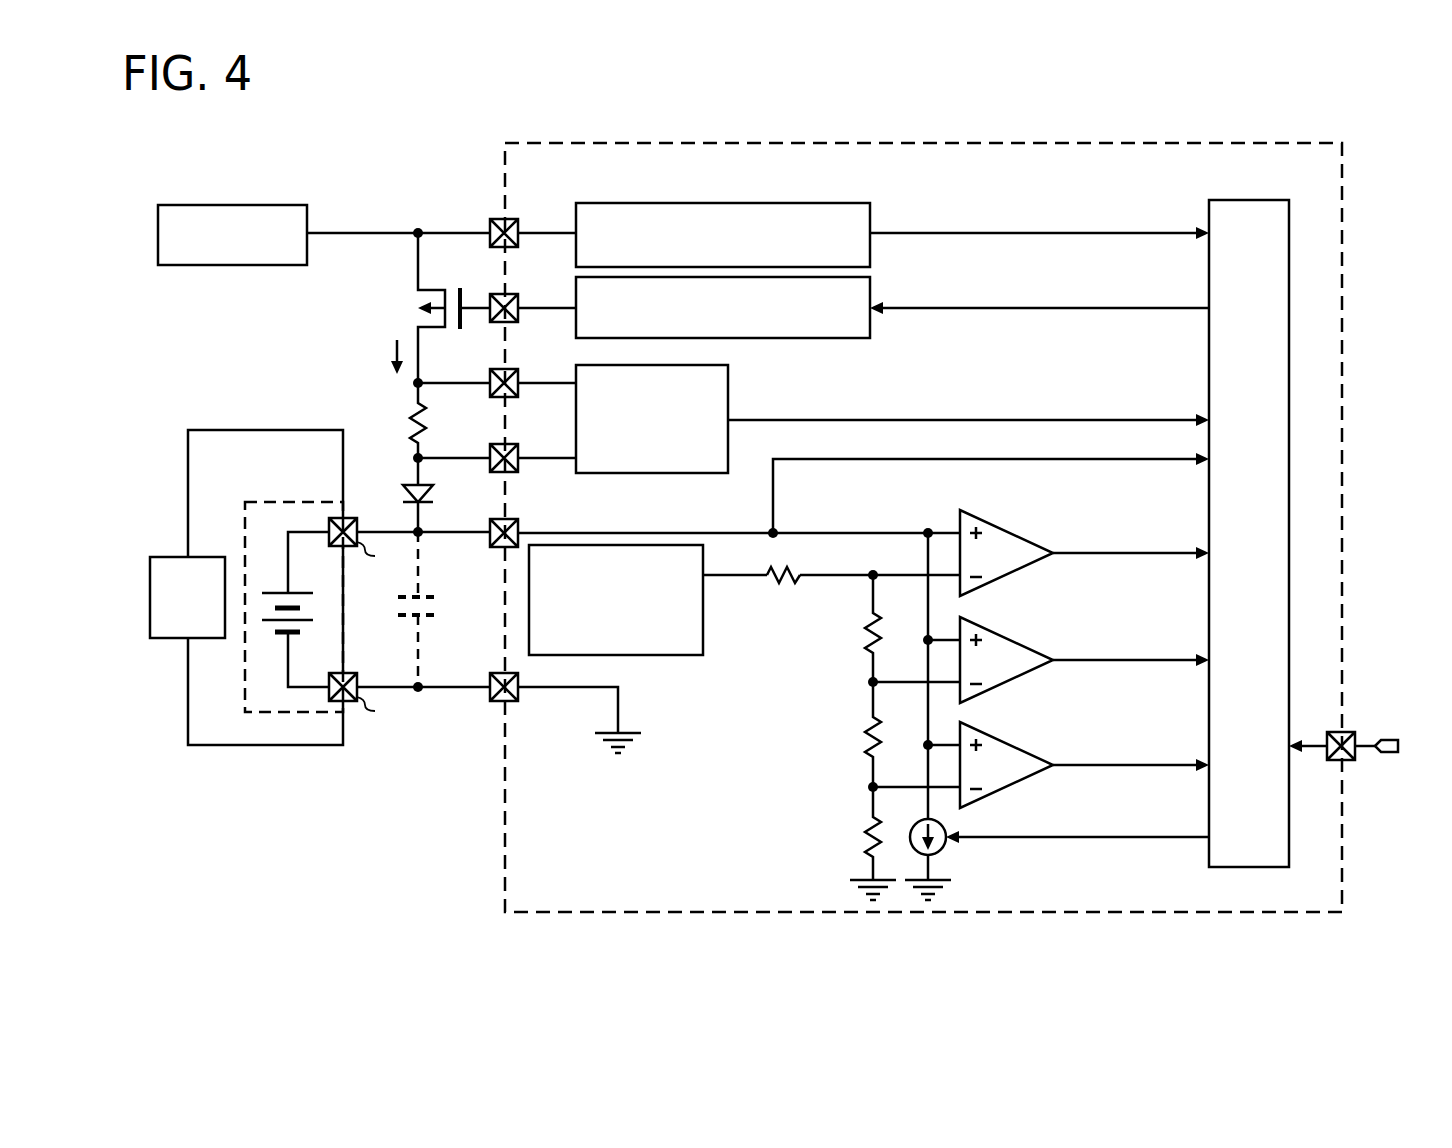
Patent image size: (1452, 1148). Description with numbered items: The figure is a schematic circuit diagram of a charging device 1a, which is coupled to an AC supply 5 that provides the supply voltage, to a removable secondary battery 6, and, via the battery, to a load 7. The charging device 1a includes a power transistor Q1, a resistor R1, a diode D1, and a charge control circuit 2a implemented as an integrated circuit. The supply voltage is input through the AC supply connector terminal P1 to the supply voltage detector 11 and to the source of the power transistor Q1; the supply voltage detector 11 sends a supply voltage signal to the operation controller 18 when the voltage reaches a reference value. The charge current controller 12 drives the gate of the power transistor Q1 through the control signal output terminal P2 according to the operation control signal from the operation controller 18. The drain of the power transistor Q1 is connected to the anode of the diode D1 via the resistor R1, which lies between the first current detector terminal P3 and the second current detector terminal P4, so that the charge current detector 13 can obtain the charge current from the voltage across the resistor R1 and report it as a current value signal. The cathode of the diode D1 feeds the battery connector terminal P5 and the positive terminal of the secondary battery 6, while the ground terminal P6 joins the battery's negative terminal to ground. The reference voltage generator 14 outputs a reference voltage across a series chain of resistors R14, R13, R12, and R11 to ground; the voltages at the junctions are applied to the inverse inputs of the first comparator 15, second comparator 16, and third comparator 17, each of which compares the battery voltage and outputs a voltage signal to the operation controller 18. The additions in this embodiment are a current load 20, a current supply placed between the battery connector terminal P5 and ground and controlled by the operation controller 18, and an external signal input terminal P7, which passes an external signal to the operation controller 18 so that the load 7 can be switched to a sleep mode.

The charging device 1a is at (1183, 98).
The charge control circuit 2a is at (1064, 141).
The AC supply 5 is at (202, 205).
The secondary battery 6 is at (274, 502).
The load 7 is at (164, 557).
The supply voltage detector 11 is at (870, 254).
The charge current controller 12 is at (870, 329).
The charge current detector 13 is at (728, 380).
The reference voltage generator 14 is at (676, 655).
The first comparator 15 is at (1008, 789).
The second comparator 16 is at (1008, 684).
The third comparator 17 is at (1008, 577).
The operation controller 18 is at (1265, 200).
The current load 20 is at (942, 850).
The AC supply connector terminal P1 is at (518, 229).
The control signal output terminal P2 is at (518, 304).
The first current detector terminal P3 is at (518, 379).
The second current detector terminal P4 is at (518, 454).
The battery connector terminal P5 is at (518, 529).
The ground terminal P6 is at (518, 697).
The external signal input terminal P7 is at (1345, 732).
The power transistor Q1 is at (454, 308).
The resistor R1 is at (399, 420).
The diode D1 is at (403, 495).
The resistor R11 is at (848, 833).
The resistor R12 is at (848, 734).
The resistor R13 is at (848, 628).
The resistor R14 is at (784, 592).